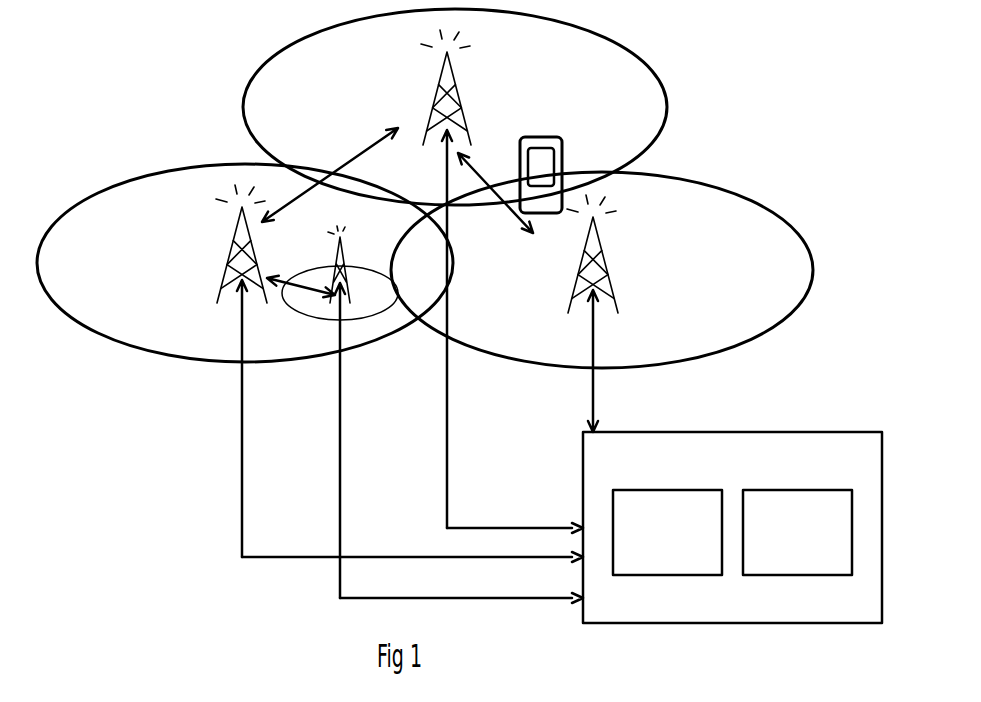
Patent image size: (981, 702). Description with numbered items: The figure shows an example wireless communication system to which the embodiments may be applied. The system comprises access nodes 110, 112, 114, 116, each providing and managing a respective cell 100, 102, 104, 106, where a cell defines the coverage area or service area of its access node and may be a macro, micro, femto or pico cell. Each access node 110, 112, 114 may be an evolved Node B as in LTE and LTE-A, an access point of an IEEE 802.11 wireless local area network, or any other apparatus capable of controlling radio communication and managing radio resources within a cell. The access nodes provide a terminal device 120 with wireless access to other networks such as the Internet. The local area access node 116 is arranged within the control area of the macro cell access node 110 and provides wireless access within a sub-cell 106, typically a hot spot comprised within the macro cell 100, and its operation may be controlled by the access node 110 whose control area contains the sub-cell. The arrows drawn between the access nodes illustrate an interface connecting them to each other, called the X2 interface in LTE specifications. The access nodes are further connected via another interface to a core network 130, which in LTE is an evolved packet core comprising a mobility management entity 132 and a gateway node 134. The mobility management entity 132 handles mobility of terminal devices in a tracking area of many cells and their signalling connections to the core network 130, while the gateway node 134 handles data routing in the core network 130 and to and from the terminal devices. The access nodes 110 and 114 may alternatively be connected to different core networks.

The cell 100 is at (192, 163).
The cell 102 is at (630, 53).
The cell 104 is at (775, 223).
The cell 106 is at (280, 278).
The access node 110 is at (237, 238).
The access node 112 is at (442, 78).
The access node 114 is at (583, 250).
The local area access node 116 is at (340, 248).
The terminal device 120 is at (540, 137).
The core network 130 is at (732, 527).
The mobility management entity 132 is at (667, 532).
The gateway node 134 is at (797, 532).